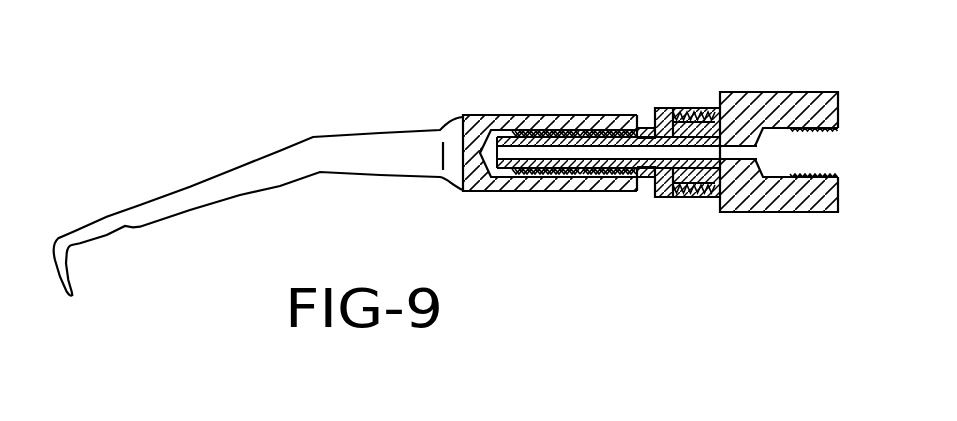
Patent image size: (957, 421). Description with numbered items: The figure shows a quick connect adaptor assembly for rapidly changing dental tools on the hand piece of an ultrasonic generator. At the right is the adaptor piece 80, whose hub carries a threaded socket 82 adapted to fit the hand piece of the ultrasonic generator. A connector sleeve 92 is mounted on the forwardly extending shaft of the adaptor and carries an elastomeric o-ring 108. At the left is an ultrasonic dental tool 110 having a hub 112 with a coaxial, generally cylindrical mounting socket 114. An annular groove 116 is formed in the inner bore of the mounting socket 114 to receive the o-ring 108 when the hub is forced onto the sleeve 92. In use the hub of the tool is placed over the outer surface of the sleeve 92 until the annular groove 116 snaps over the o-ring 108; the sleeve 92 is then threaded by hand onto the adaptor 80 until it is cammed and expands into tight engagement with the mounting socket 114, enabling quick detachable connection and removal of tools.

The adaptor piece 80 is at (778, 92).
The threaded socket 82 is at (810, 175).
The sleeve 92 is at (675, 110).
The elastomeric o-ring 108 is at (610, 130).
The ultrasonic dental tool 110 is at (350, 133).
The hub 112 is at (525, 115).
The mounting socket 114 is at (534, 178).
The annular groove 116 is at (615, 178).